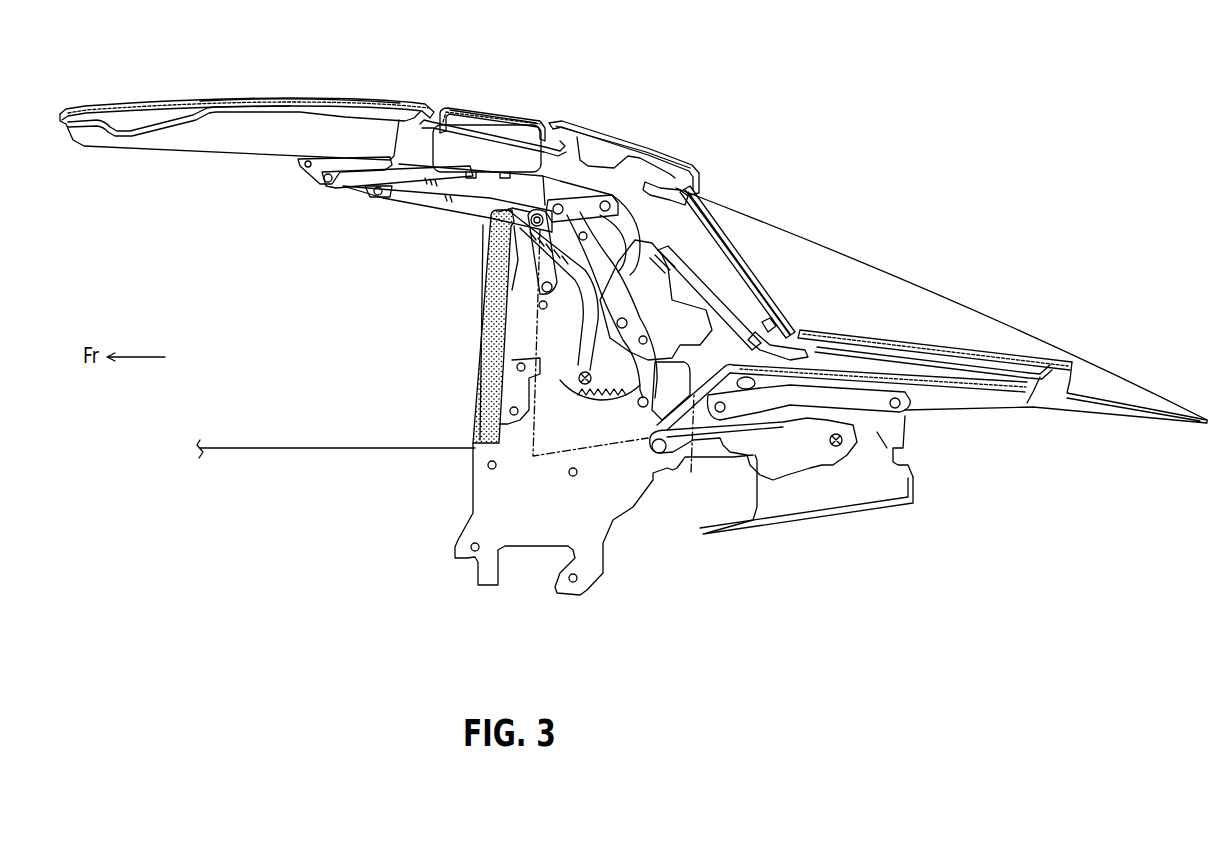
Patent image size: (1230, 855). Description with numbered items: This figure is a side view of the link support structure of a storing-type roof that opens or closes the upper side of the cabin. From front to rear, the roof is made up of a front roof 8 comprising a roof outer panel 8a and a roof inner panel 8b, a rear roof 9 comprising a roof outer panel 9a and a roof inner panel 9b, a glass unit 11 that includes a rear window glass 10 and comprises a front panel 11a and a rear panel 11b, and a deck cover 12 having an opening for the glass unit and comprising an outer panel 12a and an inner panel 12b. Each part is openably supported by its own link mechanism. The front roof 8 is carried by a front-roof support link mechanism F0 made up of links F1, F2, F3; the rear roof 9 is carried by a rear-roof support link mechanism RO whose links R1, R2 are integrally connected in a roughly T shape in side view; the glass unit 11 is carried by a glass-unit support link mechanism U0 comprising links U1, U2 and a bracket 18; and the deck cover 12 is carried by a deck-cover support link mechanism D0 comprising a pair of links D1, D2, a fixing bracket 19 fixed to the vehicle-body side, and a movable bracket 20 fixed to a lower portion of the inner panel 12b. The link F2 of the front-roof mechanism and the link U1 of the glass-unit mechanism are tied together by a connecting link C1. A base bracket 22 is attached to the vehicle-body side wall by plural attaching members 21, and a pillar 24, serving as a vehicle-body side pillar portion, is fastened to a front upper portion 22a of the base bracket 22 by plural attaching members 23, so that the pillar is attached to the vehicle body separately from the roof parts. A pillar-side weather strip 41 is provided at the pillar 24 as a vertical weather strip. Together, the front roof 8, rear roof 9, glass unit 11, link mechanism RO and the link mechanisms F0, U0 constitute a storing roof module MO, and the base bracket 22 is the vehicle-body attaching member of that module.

The front roof 8 is at (250, 95).
The roof outer panel 8a is at (148, 102).
The roof inner panel 8b is at (177, 112).
The storing roof module MO is at (330, 95).
The rear roof 9 is at (489, 108).
The roof outer panel 9a is at (456, 106).
The roof inner panel 9b is at (508, 128).
The deck cover 12 is at (682, 156).
The outer panel 12a is at (590, 128).
The inner panel 12b is at (608, 160).
The rear-roof support link mechanism RO is at (420, 170).
The glass-unit support link mechanism U0 is at (617, 210).
The link U1 is at (660, 305).
The link U2 is at (628, 277).
The link R1 is at (433, 195).
The front-roof support link mechanism F0 is at (372, 206).
The link F3 is at (402, 208).
The pillar-side weather strip 41 is at (487, 397).
The front upper portion 22a is at (500, 402).
The connecting link C1 is at (497, 268).
The link F2 is at (498, 282).
The pillar 24 is at (510, 316).
The link R2 is at (516, 337).
The attaching member 23 is at (517, 366).
The bracket 18 is at (690, 307).
The link F1 is at (625, 396).
The movable bracket 20 is at (690, 376).
The glass unit 11 is at (749, 262).
The rear window glass 10 is at (762, 280).
The front panel 11a is at (764, 347).
The rear panel 11b is at (773, 316).
The deck-cover support link mechanism D0 is at (840, 382).
The link D1 is at (895, 418).
The link D2 is at (800, 470).
The fixing bracket 19 is at (875, 503).
The base bracket 22 is at (470, 492).
The attaching member 21 is at (493, 470).